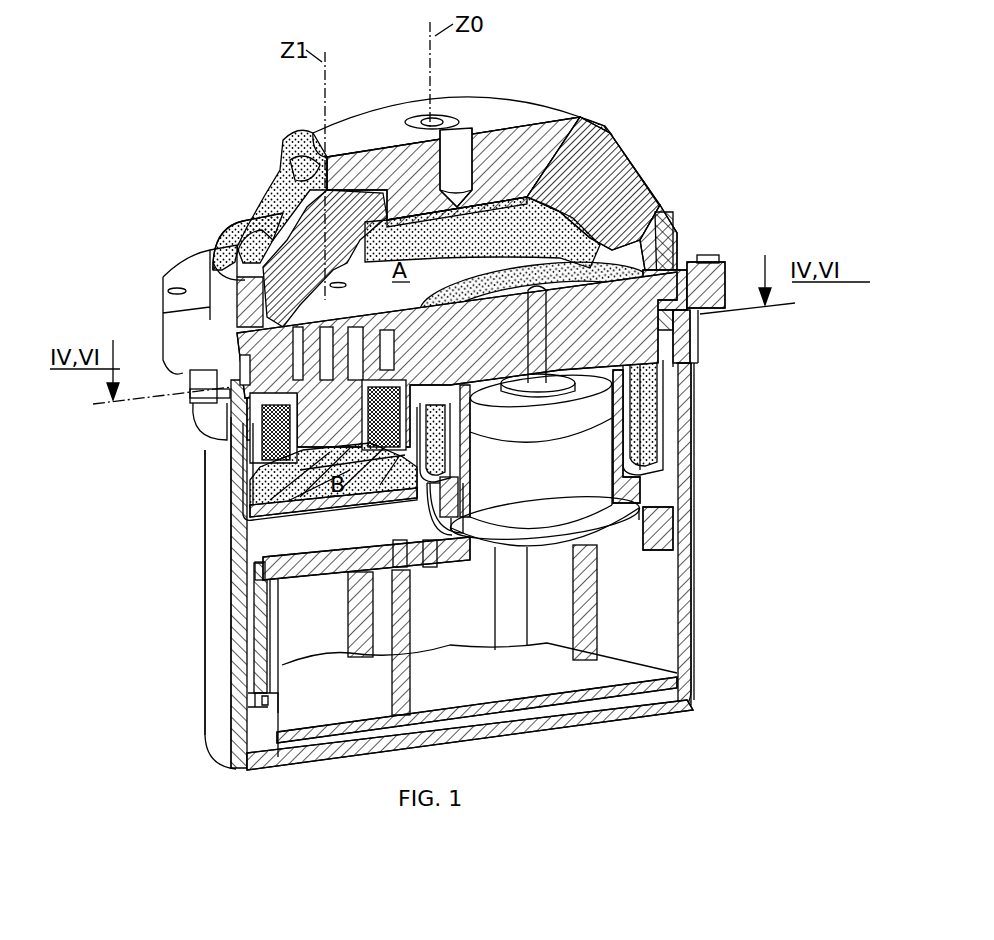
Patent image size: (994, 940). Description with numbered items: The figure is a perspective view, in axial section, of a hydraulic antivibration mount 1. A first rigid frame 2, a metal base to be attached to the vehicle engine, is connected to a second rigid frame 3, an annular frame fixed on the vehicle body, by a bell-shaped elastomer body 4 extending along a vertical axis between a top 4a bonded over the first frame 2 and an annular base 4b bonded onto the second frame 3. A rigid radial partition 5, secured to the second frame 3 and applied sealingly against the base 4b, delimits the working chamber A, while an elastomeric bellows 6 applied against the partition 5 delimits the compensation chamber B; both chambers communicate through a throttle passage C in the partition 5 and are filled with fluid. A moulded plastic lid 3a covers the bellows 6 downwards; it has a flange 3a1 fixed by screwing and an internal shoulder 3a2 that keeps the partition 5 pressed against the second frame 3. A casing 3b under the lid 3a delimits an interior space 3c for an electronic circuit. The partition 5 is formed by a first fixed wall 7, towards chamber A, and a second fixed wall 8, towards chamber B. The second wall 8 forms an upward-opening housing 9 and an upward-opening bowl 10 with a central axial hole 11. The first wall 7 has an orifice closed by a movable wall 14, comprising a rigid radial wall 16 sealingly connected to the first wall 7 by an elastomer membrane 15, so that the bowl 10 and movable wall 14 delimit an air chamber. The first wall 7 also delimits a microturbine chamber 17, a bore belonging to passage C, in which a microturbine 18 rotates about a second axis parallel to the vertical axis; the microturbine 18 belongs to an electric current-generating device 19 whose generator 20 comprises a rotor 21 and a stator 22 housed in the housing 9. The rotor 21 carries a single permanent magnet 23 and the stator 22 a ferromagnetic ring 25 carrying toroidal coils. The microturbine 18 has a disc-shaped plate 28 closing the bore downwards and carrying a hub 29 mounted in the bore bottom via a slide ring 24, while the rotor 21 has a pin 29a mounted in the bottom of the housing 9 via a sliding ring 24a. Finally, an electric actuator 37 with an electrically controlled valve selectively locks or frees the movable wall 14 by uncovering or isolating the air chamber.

The hydraulic antivibration mount 1 is at (640, 97).
The first rigid frame 2 is at (507, 112).
The second rigid frame 3 is at (665, 285).
The lid 3a is at (217, 557).
The flange 3a1 is at (703, 287).
The internal shoulder 3a2 is at (690, 367).
The casing 3b is at (224, 745).
The interior space 3c is at (652, 636).
The elastomer body 4 is at (620, 187).
The top 4a is at (585, 125).
The annular base 4b is at (647, 253).
The rigid radial partition 5 is at (290, 245).
The bellows 6 is at (660, 427).
The first fixed wall 7 is at (265, 322).
The second fixed wall 8 is at (690, 338).
The housing 9 is at (248, 467).
The bowl 10 is at (667, 370).
The axial hole 11 is at (660, 407).
The movable wall 14 is at (610, 277).
The elastomer membrane 15 is at (700, 317).
The rigid radial wall 16 is at (657, 277).
The microturbine chamber 17 is at (313, 312).
The microturbine 18 is at (300, 365).
The electric current-generating device 19 is at (225, 397).
The generator 20 is at (242, 457).
The rotor 21 is at (233, 520).
The stator 22 is at (262, 440).
The permanent magnet 23 is at (377, 505).
The slide ring 24 is at (305, 195).
The sliding ring 24a is at (357, 513).
The ferromagnetic ring 25 is at (412, 493).
The disc-shaped plate 28 is at (287, 520).
The hub 29 is at (240, 238).
The pin 29a is at (320, 508).
The electric actuator 37 is at (663, 530).